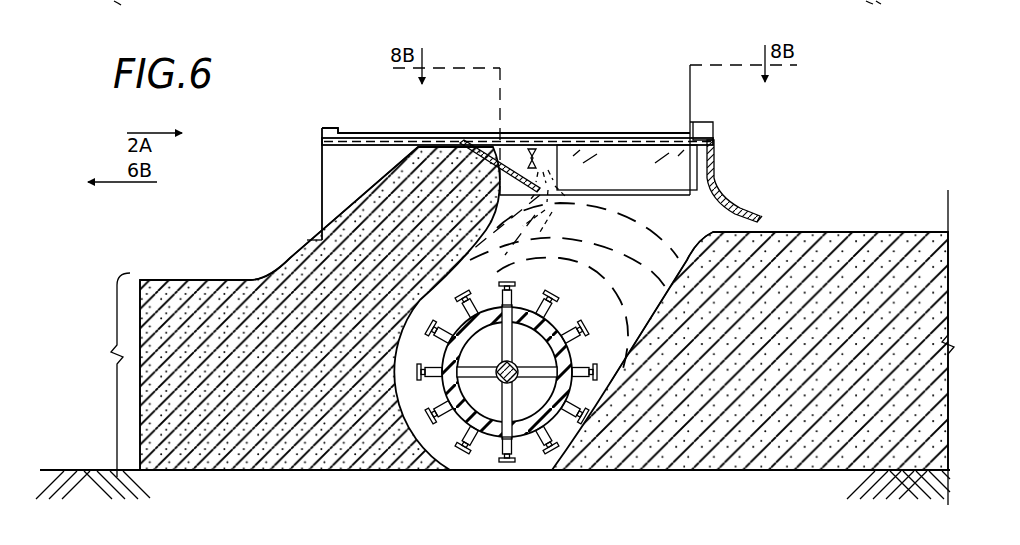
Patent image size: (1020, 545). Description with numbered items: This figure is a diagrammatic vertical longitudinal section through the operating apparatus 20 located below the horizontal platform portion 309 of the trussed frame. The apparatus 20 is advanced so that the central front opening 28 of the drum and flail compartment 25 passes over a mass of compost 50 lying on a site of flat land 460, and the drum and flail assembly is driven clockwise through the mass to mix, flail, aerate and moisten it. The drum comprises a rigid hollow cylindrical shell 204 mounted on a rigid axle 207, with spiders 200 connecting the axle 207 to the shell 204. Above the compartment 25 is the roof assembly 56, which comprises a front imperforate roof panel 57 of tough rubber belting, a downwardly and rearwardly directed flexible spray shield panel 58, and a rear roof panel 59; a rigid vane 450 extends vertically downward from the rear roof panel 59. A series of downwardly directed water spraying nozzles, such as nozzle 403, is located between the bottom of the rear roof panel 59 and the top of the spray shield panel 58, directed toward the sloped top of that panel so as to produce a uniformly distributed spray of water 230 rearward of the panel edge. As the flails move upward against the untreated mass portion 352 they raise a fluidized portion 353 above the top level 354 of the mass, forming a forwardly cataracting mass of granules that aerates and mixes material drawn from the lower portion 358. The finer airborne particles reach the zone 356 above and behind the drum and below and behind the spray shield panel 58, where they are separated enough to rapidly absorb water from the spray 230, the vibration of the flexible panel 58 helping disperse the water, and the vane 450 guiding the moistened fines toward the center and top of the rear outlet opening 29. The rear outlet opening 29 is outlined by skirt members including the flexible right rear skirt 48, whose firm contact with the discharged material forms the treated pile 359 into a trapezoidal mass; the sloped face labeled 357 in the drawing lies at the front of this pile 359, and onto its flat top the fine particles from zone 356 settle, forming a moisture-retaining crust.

The operating apparatus 20 is at (318, 138).
The drum and flail compartment 25 is at (345, 166).
The central front opening 28 is at (322, 200).
The rear outlet opening 29 is at (764, 217).
The flexible right rear skirt 48 is at (735, 209).
The mass of compost 50 is at (112, 372).
The roof assembly 56 is at (338, 150).
The front imperforate roof panel 57 is at (393, 146).
The spray shield panel 58 is at (520, 150).
The rear roof panel 59 is at (648, 140).
The spider 200 is at (507, 410).
The cylindrical shell 204 is at (530, 346).
The axle 207 is at (504, 362).
The spray of water 230 is at (548, 184).
The horizontal platform portion 309 is at (348, 132).
The untreated mass portion 352 is at (197, 358).
The fluidized portion 353 is at (293, 244).
The top level of the mass 354 is at (182, 280).
The zone of dispersed particles 356 is at (605, 235).
The sloped surface 357 is at (672, 294).
The lower portion of the mass 358 is at (352, 407).
The treated pile 359 is at (830, 290).
The water spraying nozzle 403 is at (533, 148).
The vane 450 is at (612, 160).
The site of flat land 460 is at (96, 472).